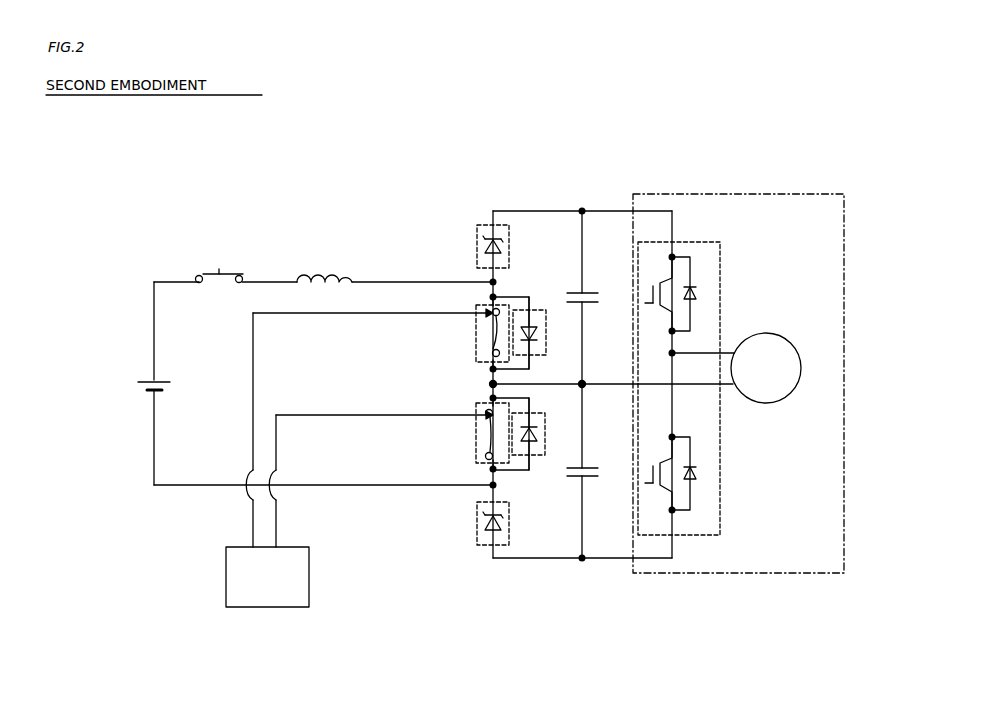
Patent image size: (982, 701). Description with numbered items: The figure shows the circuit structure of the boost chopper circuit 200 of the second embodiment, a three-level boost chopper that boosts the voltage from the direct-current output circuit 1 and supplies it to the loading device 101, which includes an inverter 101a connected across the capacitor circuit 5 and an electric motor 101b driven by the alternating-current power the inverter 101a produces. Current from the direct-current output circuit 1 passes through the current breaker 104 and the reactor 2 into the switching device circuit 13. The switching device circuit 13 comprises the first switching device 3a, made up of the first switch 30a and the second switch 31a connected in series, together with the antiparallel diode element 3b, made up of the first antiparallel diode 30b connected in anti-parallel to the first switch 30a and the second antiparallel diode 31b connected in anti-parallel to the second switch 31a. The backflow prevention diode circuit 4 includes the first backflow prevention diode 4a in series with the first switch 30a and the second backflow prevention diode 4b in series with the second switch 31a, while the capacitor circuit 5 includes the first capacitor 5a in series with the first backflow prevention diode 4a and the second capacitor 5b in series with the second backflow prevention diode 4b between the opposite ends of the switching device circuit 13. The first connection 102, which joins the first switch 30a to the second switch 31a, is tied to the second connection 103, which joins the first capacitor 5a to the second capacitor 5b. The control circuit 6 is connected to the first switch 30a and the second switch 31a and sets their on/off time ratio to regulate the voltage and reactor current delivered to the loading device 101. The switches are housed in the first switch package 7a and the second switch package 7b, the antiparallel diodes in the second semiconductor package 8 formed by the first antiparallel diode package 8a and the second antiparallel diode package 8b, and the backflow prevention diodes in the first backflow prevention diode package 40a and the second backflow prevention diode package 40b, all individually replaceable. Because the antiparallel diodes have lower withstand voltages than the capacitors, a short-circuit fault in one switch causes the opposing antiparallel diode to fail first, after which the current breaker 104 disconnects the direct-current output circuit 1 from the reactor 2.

The boost chopper circuit 200 is at (122, 178).
The direct-current output circuit 1 is at (143, 378).
The current breaker 104 is at (203, 268).
The reactor 2 is at (302, 277).
The control circuit 6 is at (226, 573).
The backflow prevention diode circuit 4 is at (452, 222).
The first backflow prevention diode 4a is at (478, 245).
The second backflow prevention diode 4b is at (478, 522).
The first backflow prevention diode package 40a is at (478, 226).
The second backflow prevention diode package 40b is at (480, 547).
The switching device circuit 13 is at (486, 386).
The first switching device 3a is at (428, 388).
The antiparallel diode element 3b is at (559, 386).
The first switch 30a is at (477, 334).
The second switch 31a is at (477, 436).
The first antiparallel diode 30b is at (559, 273).
The second antiparallel diode 31b is at (559, 496).
The first switch package 7a is at (477, 360).
The second switch package 7b is at (477, 463).
The second semiconductor package 8 is at (547, 330).
The first antiparallel diode package 8a is at (569, 335).
The second antiparallel diode package 8b is at (546, 440).
The first connection 102 is at (490, 384).
The second connection 103 is at (582, 384).
The capacitor circuit 5 is at (595, 270).
The first capacitor 5a is at (590, 290).
The second capacitor 5b is at (590, 480).
The loading device 101 is at (712, 194).
The inverter 101a is at (721, 268).
The electric motor 101b is at (768, 318).